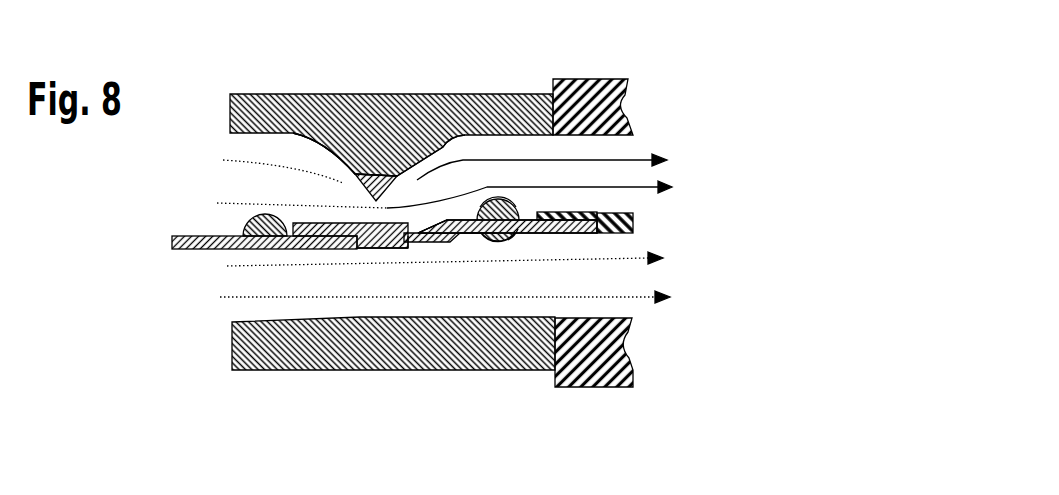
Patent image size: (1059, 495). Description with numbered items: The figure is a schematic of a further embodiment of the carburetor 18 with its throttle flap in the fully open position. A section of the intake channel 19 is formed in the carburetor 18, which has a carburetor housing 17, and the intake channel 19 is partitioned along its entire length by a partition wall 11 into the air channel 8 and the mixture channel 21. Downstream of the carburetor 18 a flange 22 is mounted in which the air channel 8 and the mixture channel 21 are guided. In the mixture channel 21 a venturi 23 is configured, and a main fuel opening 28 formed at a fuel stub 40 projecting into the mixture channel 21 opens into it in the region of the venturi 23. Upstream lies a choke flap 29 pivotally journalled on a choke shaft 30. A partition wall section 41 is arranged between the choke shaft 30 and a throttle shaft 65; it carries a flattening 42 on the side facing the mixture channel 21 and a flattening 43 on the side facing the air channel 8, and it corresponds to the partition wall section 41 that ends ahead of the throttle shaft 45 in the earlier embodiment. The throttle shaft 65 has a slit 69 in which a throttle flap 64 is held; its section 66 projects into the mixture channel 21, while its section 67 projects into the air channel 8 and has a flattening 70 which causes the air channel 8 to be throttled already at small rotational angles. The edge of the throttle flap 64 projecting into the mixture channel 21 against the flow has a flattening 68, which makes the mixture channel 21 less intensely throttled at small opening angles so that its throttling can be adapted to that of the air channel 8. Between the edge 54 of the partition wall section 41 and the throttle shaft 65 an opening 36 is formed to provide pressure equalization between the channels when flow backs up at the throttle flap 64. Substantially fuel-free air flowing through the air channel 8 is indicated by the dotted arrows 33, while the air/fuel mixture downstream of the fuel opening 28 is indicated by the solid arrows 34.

The air channel 8 is at (602, 277).
The partition wall 11 is at (633, 222).
The carburetor housing 17 is at (230, 106).
The carburetor 18 is at (244, 72).
The intake channel 19 is at (248, 287).
The mixture channel 21 is at (600, 178).
The flange 22 is at (587, 103).
The venturi 23 is at (341, 173).
The main fuel opening 28 is at (387, 176).
The choke flap 29 is at (172, 242).
The choke shaft 30 is at (242, 220).
The arrows drawn with a dotted line 33 is at (620, 298).
The arrows drawn by solid lines 34 is at (615, 158).
The opening 36 is at (469, 238).
The fuel stub 40 is at (370, 180).
The partition wall section 41 is at (381, 248).
The flattening 42 is at (313, 222).
The flattening 43 is at (403, 248).
The throttle shaft 45 is at (567, 133).
The edge 54 is at (429, 243).
The throttle flap 64 is at (464, 220).
The throttle shaft 65 is at (514, 237).
The section 66 is at (510, 200).
The section 67 is at (486, 242).
The flattening 68 is at (436, 220).
The slit 69 is at (495, 199).
The flattening 70 is at (506, 242).